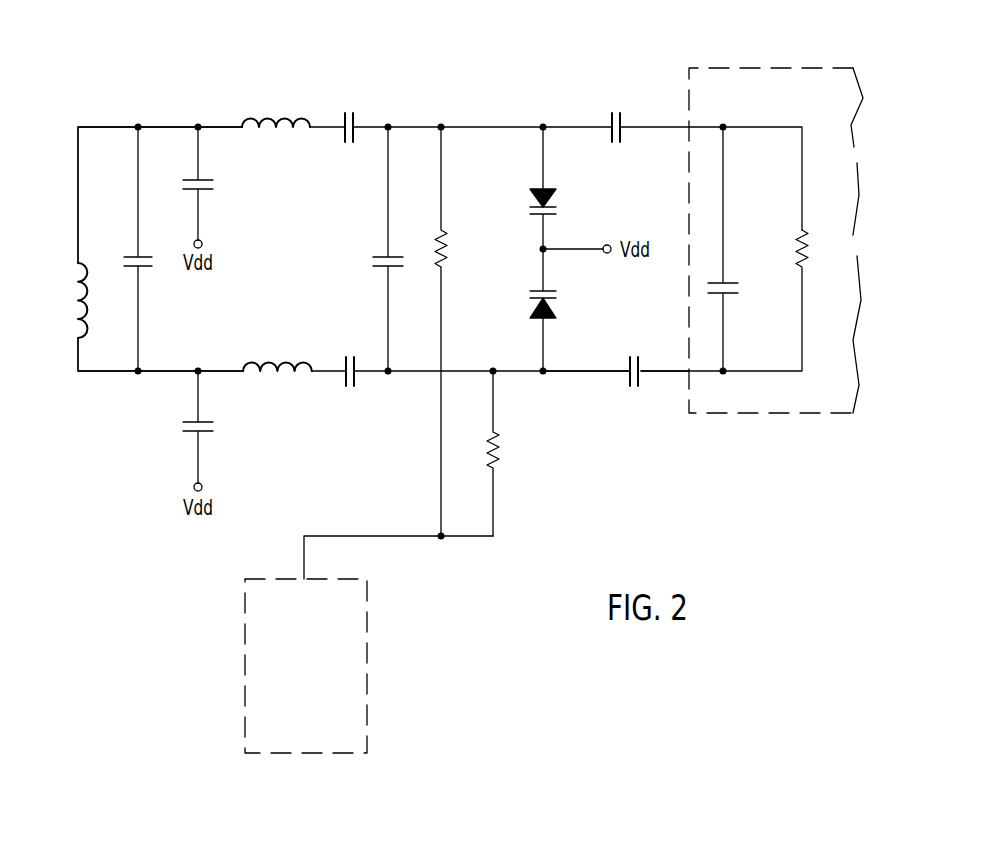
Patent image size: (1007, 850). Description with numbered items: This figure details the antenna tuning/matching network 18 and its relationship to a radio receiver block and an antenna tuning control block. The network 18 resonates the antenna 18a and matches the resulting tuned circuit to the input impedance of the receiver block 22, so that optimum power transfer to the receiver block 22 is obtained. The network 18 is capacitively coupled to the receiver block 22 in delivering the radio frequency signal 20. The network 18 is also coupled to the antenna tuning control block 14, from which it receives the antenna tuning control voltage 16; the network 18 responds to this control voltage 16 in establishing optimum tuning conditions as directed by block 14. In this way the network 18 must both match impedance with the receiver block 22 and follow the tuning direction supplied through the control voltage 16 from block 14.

The antenna tuning control block 14 is at (365, 637).
The antenna tuning control voltage 16 is at (305, 557).
The antenna tuning/matching network 18 is at (110, 86).
The antenna 18a is at (70, 364).
The radio frequency signal 20 is at (651, 404).
The receiver block 22 is at (748, 413).